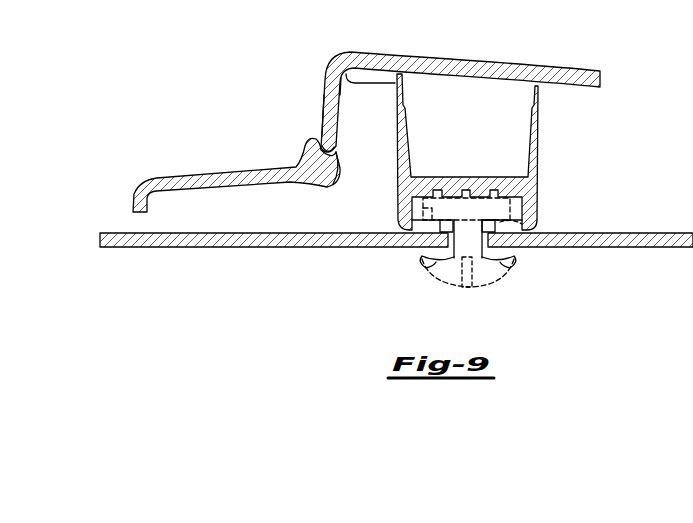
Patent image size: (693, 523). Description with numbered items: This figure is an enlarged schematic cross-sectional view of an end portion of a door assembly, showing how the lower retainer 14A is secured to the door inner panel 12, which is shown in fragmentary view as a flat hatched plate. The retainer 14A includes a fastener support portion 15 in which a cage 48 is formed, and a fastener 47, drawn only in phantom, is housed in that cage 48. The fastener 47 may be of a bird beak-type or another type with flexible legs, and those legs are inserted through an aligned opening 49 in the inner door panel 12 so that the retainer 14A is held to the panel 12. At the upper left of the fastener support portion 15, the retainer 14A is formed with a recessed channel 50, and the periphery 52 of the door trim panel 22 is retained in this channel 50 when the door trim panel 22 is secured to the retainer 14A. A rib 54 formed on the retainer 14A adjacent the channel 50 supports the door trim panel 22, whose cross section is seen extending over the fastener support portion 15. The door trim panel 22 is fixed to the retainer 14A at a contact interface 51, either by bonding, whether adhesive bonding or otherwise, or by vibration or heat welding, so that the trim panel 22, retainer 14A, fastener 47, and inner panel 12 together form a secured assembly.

The door inner panel 12 is at (178, 250).
The lower retainer 14A is at (250, 176).
The door trim panel 22 is at (533, 70).
The fastener support portion 15 is at (540, 150).
The rib 54 is at (330, 117).
The contact interface 51 is at (351, 99).
The recessed channel 50 is at (328, 147).
The periphery 52 is at (326, 160).
The cage 48 is at (520, 198).
The fastener 47 is at (527, 222).
The opening 49 is at (455, 244).